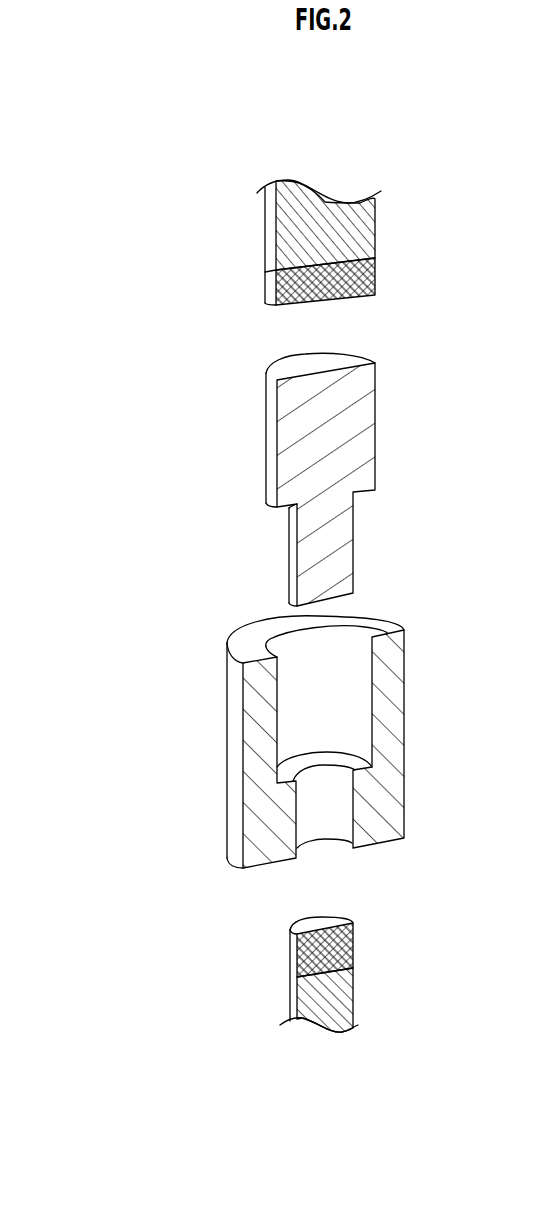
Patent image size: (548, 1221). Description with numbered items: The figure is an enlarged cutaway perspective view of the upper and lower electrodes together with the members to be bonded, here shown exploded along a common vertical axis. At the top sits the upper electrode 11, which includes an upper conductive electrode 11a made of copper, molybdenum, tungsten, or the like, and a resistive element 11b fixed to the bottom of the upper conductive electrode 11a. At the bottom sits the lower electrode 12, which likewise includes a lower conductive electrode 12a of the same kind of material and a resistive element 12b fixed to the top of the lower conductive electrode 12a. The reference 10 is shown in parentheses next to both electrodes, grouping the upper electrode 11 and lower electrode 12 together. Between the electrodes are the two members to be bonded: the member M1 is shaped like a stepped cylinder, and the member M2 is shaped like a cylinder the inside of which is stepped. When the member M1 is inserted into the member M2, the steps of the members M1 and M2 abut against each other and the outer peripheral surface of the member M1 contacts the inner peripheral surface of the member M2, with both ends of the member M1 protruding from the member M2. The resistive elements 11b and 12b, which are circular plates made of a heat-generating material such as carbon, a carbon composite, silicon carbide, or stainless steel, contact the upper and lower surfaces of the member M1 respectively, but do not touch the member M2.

The workpiece (material) 10 is at (220, 606).
The upper electrode 11 is at (220, 242).
The upper conductive electrode 11a is at (284, 243).
The resistive element 11b is at (287, 295).
The lower electrode 12 is at (219, 974).
The lower conductive electrode 12a is at (300, 1005).
The resistive element 12b is at (297, 953).
The member to be bonded M1 is at (297, 441).
The member to be bonded M2 is at (253, 792).